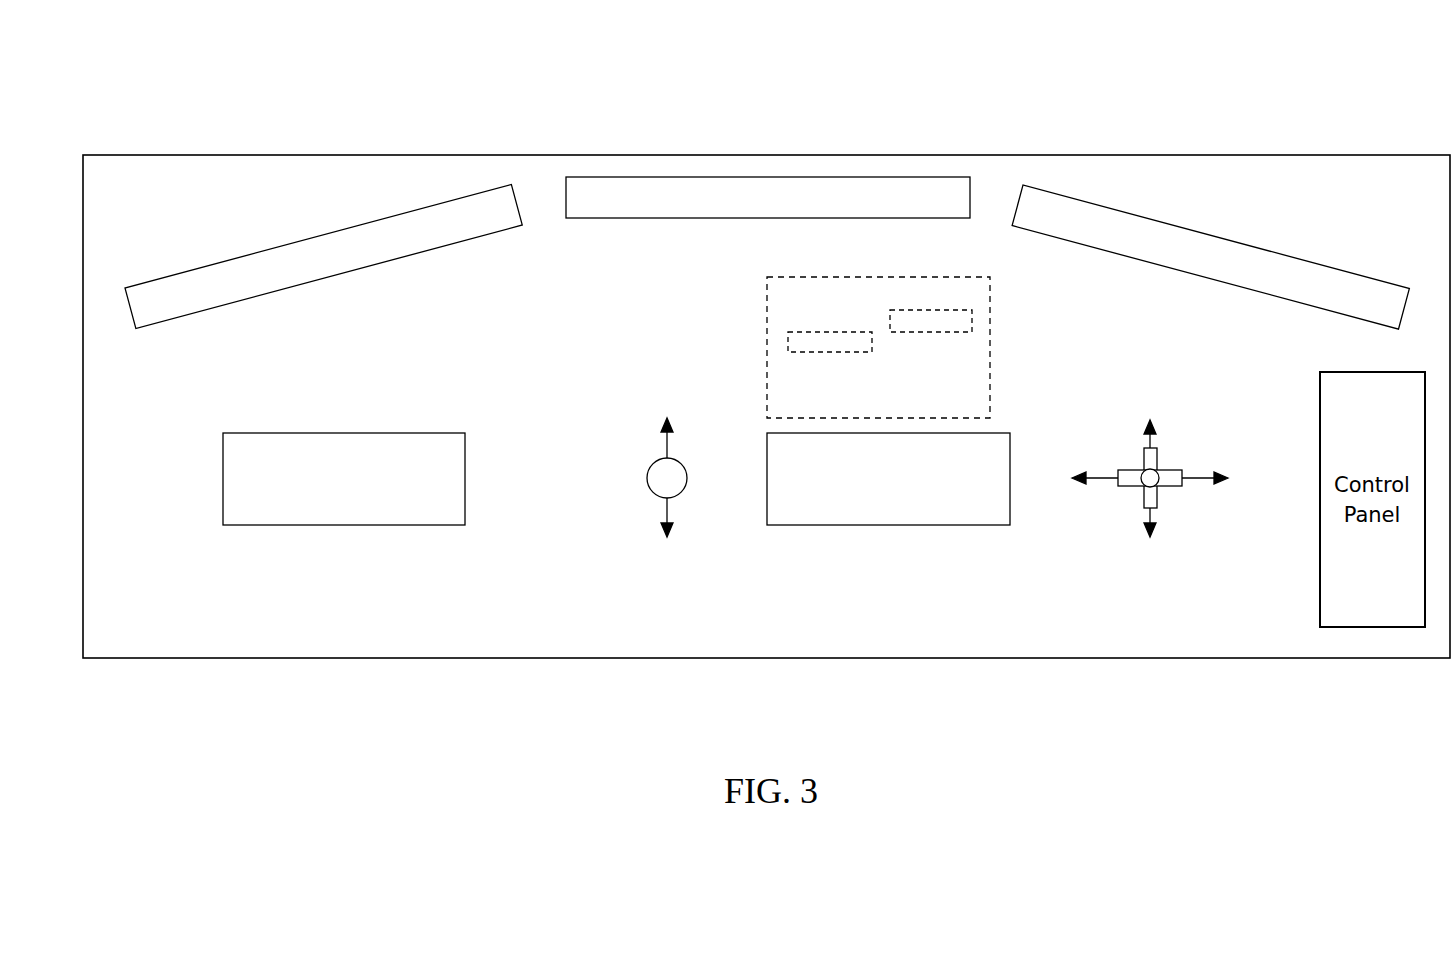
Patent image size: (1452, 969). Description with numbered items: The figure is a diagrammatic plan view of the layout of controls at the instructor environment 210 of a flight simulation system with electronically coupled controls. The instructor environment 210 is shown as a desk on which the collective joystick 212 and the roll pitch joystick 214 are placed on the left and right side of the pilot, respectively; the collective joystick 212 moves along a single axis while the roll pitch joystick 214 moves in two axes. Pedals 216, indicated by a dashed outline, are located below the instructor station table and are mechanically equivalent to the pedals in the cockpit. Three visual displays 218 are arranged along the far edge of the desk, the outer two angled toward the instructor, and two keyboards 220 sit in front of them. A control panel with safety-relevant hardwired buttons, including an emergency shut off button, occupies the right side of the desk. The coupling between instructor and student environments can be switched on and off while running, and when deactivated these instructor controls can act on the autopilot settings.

The instructor environment 210 is at (228, 133).
The collective joystick 212 is at (638, 490).
The roll pitch joystick 214 is at (1120, 503).
The pedals 216 is at (792, 377).
The visual displays 218 is at (478, 192).
The keyboards 220 is at (302, 523).